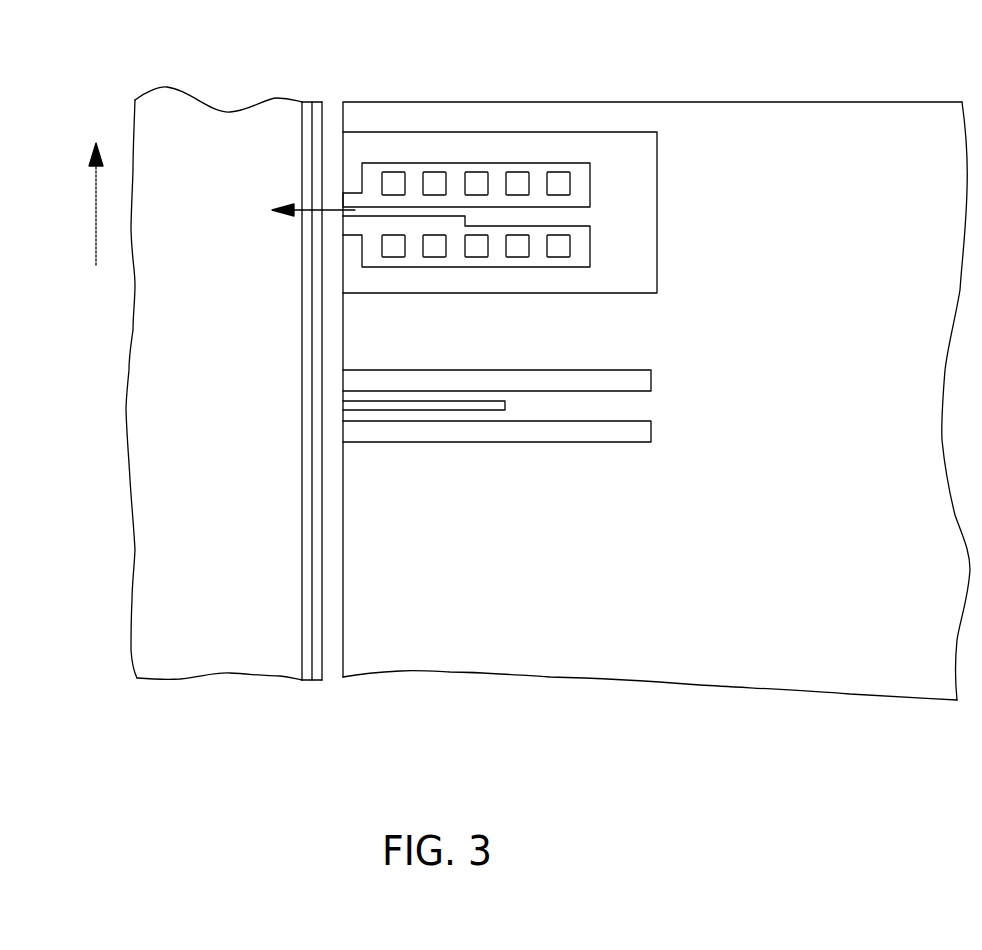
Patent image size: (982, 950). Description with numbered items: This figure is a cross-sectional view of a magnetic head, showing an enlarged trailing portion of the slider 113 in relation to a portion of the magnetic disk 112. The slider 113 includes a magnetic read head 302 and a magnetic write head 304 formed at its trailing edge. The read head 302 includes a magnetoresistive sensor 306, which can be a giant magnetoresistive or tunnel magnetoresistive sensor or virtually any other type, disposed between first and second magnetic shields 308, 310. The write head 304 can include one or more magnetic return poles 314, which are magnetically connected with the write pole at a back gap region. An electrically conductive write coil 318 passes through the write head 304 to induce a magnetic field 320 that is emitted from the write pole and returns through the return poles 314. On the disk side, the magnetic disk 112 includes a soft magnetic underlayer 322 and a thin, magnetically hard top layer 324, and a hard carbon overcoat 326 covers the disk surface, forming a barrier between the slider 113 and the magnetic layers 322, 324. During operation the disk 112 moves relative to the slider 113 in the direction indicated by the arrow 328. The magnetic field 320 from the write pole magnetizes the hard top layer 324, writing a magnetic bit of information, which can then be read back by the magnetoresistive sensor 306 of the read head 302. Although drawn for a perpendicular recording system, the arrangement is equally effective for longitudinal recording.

The magnetic disk 112 is at (187, 74).
The slider 113 is at (584, 84).
The magnetic read head 302 is at (670, 442).
The magnetic write head 304 is at (672, 293).
The magnetoresistive sensor 306 is at (505, 405).
The first magnetic shield 308 is at (490, 430).
The second magnetic shield 310 is at (490, 380).
The magnetic return pole 314 is at (382, 155).
The write coil 318 is at (570, 184).
The magnetic field 320 is at (326, 207).
The soft magnetic underlayer 322 is at (256, 368).
The magnetically hard top layer 324 is at (306, 101).
The carbon overcoat 326 is at (318, 101).
The arrow 328 is at (96, 226).